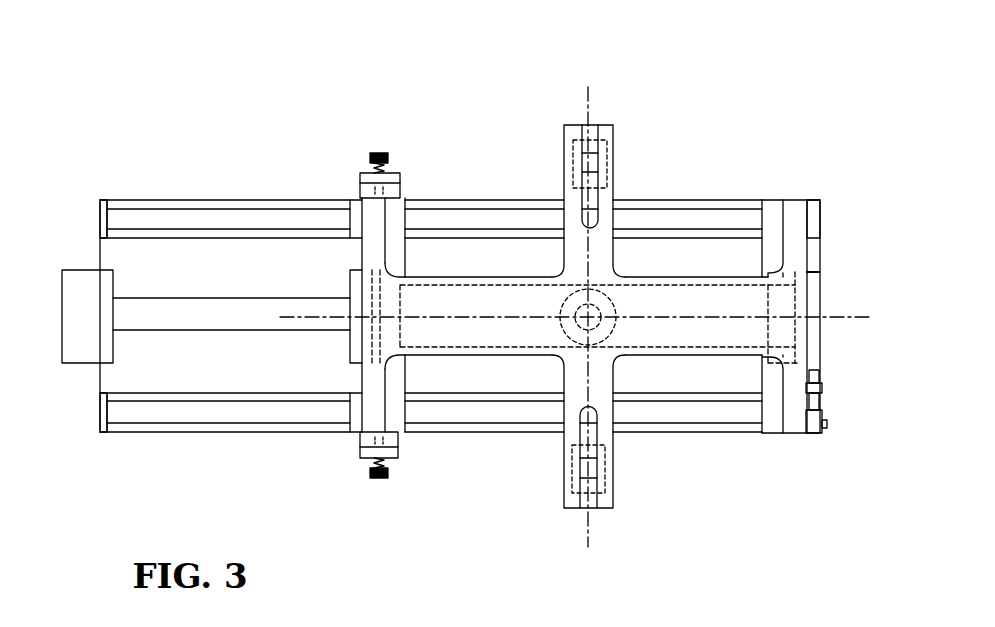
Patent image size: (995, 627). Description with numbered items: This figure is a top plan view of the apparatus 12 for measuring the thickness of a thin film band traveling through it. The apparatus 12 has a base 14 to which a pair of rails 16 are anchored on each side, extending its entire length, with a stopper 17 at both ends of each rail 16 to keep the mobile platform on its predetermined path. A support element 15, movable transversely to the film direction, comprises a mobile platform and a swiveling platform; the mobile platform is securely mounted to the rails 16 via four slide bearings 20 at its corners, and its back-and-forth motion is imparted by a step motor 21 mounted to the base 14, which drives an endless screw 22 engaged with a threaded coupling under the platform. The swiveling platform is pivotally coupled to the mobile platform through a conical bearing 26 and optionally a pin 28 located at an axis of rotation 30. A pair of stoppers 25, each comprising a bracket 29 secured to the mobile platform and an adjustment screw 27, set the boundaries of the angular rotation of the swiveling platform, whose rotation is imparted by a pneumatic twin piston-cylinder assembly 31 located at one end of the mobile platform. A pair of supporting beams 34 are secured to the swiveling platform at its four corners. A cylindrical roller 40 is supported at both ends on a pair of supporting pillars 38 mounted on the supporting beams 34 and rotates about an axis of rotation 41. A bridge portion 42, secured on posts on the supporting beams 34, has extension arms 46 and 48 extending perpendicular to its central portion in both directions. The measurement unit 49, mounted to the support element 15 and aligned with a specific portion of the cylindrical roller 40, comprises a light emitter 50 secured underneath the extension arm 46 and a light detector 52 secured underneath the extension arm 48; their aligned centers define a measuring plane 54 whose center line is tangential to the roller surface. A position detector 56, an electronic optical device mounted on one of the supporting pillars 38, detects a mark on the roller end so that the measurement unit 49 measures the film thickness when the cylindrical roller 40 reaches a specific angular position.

The apparatus 12 is at (192, 84).
The base 14 is at (222, 201).
The support element 15 is at (793, 230).
The rails 16 is at (186, 218).
The stopper 17 is at (101, 213).
The slide bearings 20 is at (810, 202).
The step motor 21 is at (95, 300).
The endless screw 22 is at (148, 312).
The stoppers 25 is at (348, 156).
The conical bearing 26 is at (533, 285).
The adjustment screw 27 is at (378, 155).
The pin 28 is at (562, 305).
The bracket 29 is at (365, 440).
The axis of rotation 30 is at (591, 290).
The pneumatic twin piston-cylinder assembly 31 is at (822, 380).
The supporting beams 34 is at (398, 220).
The supporting pillars 38 is at (352, 272).
The cylindrical roller 40 is at (690, 303).
The axis of rotation 41 is at (293, 312).
The bridge portion 42 is at (487, 333).
The extension arm 46 is at (603, 413).
The extension arm 48 is at (607, 220).
The measurement unit 49 is at (549, 487).
The light emitter 50 is at (590, 468).
The light detector 52 is at (593, 163).
The measuring plane 54 is at (590, 97).
The position detector 56 is at (820, 298).